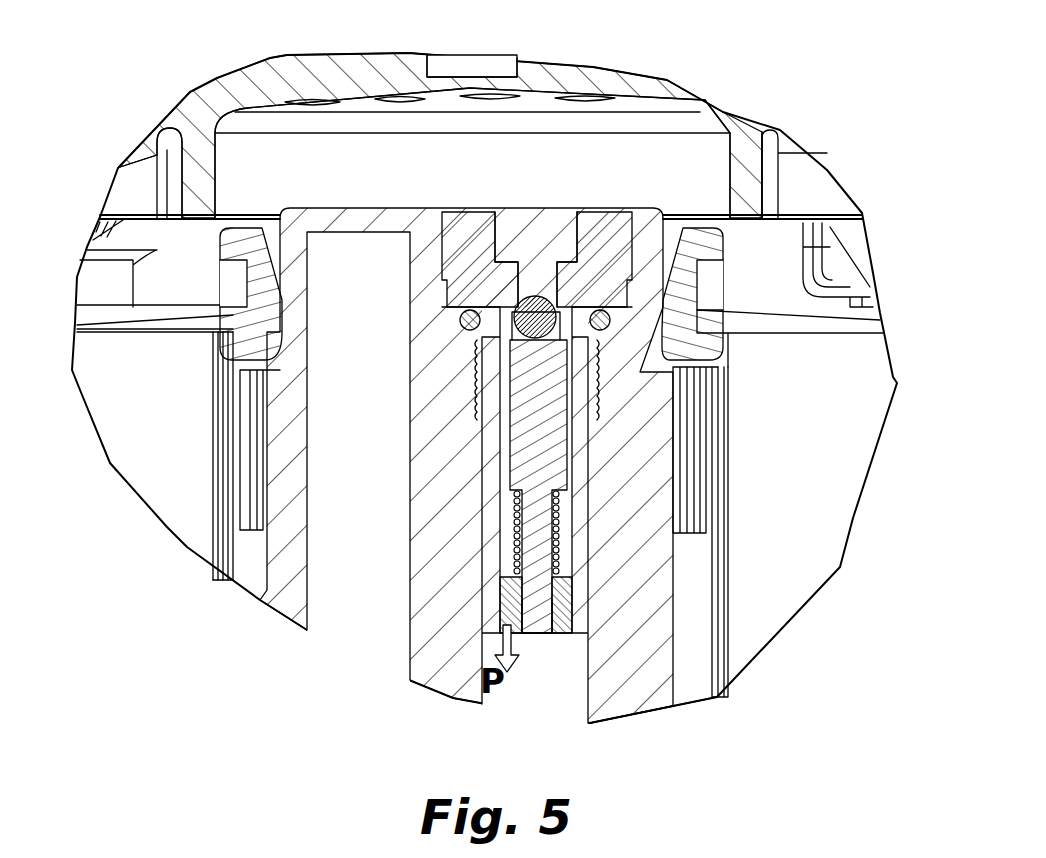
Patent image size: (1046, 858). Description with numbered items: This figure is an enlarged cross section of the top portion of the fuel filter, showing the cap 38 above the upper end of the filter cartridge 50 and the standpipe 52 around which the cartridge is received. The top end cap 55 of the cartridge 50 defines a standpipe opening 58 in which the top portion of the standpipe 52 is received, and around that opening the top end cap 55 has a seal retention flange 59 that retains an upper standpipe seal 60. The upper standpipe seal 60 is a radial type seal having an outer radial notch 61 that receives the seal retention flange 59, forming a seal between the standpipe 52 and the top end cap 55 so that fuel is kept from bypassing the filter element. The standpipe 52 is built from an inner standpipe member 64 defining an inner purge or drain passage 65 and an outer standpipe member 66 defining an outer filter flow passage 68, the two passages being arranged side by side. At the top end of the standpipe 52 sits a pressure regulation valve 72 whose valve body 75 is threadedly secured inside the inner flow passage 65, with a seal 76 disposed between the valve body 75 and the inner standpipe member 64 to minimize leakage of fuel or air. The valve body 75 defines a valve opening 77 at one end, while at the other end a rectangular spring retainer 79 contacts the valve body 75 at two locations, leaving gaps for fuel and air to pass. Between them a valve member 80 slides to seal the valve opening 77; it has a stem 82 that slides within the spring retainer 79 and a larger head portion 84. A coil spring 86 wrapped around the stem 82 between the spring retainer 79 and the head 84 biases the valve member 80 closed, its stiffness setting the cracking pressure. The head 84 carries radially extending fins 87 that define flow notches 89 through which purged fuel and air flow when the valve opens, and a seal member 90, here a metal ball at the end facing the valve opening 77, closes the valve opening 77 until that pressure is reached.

The cap 38 is at (747, 130).
The filter cartridge 50 is at (860, 394).
The standpipe 52 is at (280, 448).
The top end cap 55 is at (857, 321).
The standpipe opening 58 is at (333, 278).
The seal retention flange 59 is at (233, 268).
The upper standpipe seal 60 is at (238, 258).
The outer radial notch 61 is at (706, 291).
The inner standpipe member 64 is at (437, 605).
The inner purge or drain passage 65 is at (556, 682).
The outer standpipe member 66 is at (253, 556).
The outer filter flow passage 68 is at (350, 385).
The pressure regulation valve 72 is at (470, 237).
The valve body 75 is at (600, 237).
The seal 76 is at (461, 322).
The valve opening 77 is at (540, 286).
The spring retainer 79 is at (567, 605).
The valve member 80 is at (678, 442).
The stem 82 is at (535, 607).
The head portion 84 is at (678, 390).
The spring 86 is at (553, 518).
The fins 87 is at (680, 412).
The flow notches 89 is at (497, 442).
The seal member 90 is at (555, 320).